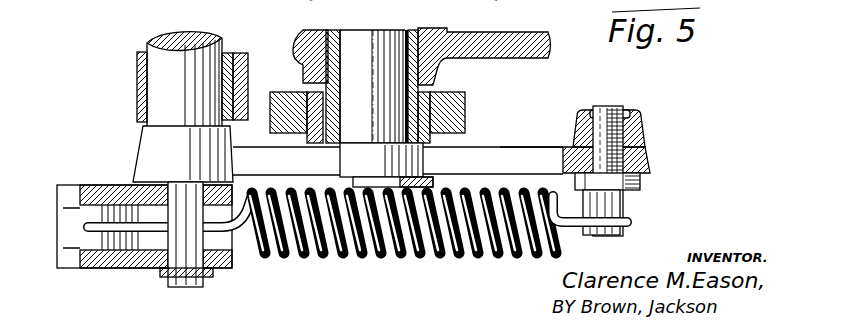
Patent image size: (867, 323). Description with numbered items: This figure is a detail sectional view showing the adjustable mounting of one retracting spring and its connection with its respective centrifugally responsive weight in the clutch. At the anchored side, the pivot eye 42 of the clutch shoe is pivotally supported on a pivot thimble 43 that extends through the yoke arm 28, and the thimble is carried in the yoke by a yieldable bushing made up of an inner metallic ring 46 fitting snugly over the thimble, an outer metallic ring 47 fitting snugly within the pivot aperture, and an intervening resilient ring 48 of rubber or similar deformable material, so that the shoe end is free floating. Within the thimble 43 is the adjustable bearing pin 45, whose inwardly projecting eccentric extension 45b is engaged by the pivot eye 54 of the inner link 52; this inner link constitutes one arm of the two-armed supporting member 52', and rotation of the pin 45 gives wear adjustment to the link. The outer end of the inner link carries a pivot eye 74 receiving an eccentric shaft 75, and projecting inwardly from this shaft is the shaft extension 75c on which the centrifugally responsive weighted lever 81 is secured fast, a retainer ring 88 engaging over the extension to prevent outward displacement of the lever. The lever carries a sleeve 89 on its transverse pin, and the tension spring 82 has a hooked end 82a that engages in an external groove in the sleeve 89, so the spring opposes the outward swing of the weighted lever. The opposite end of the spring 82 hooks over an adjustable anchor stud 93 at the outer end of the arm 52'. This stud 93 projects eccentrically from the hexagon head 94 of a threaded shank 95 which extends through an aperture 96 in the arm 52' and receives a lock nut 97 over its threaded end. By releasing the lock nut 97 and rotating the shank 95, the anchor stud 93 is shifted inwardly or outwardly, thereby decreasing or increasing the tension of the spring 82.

The yoke arm 28 is at (465, 100).
The pivot eye 42 is at (297, 44).
The pivot thimble 43 is at (333, 86).
The adjustable bearing pin 45 is at (353, 35).
The eccentric extension 45b is at (417, 182).
The inner metallic ring 46 is at (330, 143).
The outer metallic ring 47 is at (308, 140).
The resilient ring 48 is at (318, 141).
The inner link 52 is at (398, 149).
The two-armed supporting member 52' is at (531, 138).
The pivot eye 54 is at (373, 170).
The pivot eye 74 is at (147, 150).
The eccentric shaft 75 is at (163, 72).
The shaft extension 75c is at (180, 255).
The weighted lever 81 is at (118, 268).
The tension spring 82 is at (381, 260).
The hooked end 82a is at (80, 262).
The retainer ring 88 is at (208, 273).
The sleeve 89 is at (102, 215).
The anchor stud 93 is at (622, 207).
The hexagon head 94 is at (643, 180).
The threaded shank 95 is at (608, 107).
The aperture 96 is at (645, 155).
The lock nut 97 is at (643, 128).